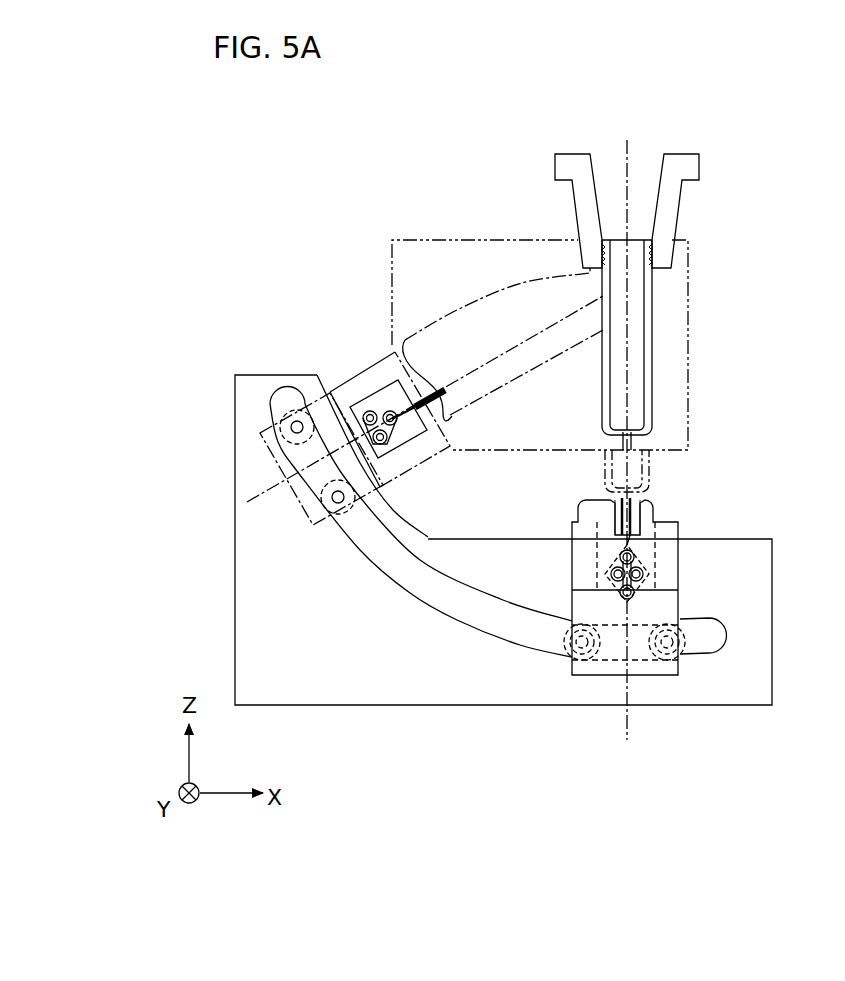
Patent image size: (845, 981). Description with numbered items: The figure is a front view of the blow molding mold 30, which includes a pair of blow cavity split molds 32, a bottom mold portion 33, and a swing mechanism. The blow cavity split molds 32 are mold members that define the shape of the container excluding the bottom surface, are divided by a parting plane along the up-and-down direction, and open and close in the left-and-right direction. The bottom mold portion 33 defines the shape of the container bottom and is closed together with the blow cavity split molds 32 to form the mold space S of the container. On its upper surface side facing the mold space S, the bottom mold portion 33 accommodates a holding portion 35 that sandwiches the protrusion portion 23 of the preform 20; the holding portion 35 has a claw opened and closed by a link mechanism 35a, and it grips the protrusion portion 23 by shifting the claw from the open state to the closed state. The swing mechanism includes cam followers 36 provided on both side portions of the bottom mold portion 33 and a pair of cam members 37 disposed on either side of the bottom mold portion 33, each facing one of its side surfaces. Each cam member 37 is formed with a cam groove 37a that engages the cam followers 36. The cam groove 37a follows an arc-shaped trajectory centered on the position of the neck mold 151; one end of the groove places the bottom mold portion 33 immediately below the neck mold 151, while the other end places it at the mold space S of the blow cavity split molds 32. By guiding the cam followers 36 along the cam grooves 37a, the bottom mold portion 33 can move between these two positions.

The blow molding mold 30 is at (717, 120).
The neck mold 151 is at (680, 200).
The blow cavity split mold 32 is at (692, 329).
The preform 20 is at (650, 376).
The protrusion portion 23 is at (640, 442).
The holding portion 35 is at (634, 512).
The bottom mold portion 33 is at (686, 549).
The link mechanism 35a is at (645, 572).
The cam follower 36 is at (650, 660).
The cam member 37 is at (423, 707).
The cam groove 37a is at (412, 585).
The mold space S is at (522, 283).